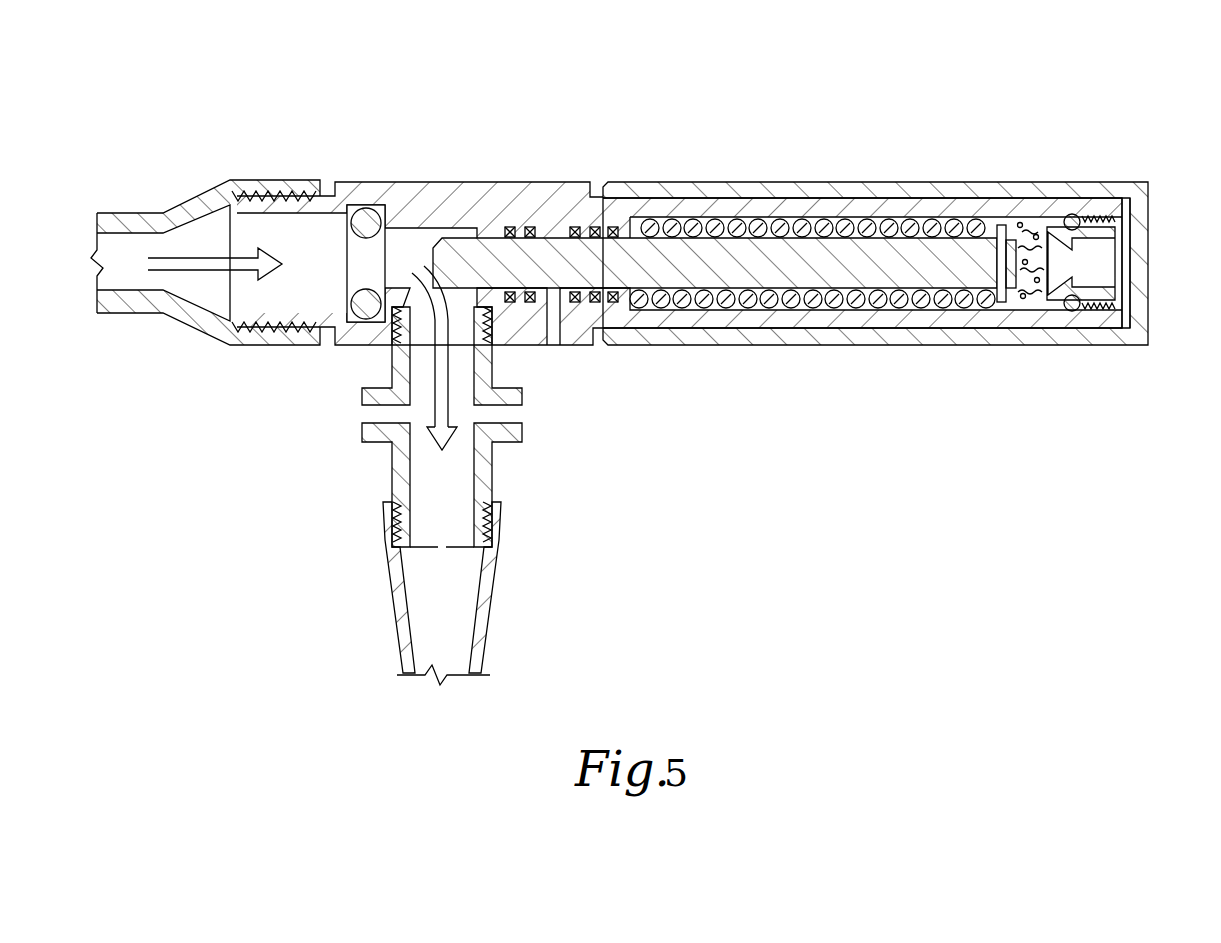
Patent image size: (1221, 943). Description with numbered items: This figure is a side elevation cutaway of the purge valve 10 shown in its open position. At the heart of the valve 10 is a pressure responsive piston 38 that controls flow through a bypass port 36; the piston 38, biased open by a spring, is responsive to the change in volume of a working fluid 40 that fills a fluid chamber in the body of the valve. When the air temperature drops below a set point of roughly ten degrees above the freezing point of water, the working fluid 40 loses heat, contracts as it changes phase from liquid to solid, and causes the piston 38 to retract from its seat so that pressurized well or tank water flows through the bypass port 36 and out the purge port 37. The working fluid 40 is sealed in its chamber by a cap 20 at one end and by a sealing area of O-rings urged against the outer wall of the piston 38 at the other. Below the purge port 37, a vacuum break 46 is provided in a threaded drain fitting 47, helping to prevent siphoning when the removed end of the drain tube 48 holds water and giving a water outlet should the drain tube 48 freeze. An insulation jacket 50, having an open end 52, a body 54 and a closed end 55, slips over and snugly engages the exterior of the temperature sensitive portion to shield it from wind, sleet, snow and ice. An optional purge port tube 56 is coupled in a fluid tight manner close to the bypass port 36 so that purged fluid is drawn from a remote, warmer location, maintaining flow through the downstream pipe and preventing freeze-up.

The valve 10 is at (470, 98).
The cap 20 is at (1103, 288).
The bypass port 36 is at (354, 276).
The purge port 37 is at (427, 338).
The pressure responsive piston 38 is at (760, 275).
The working fluid 40 is at (1025, 303).
The vacuum break 46 is at (518, 415).
The threaded drain fitting 47 is at (340, 367).
The drain tube 48 is at (498, 586).
The insulation jacket 50 is at (1038, 160).
The open end 52 is at (600, 196).
The body 54 is at (838, 182).
The closed end 55 is at (1148, 215).
The purge port tube 56 is at (194, 200).